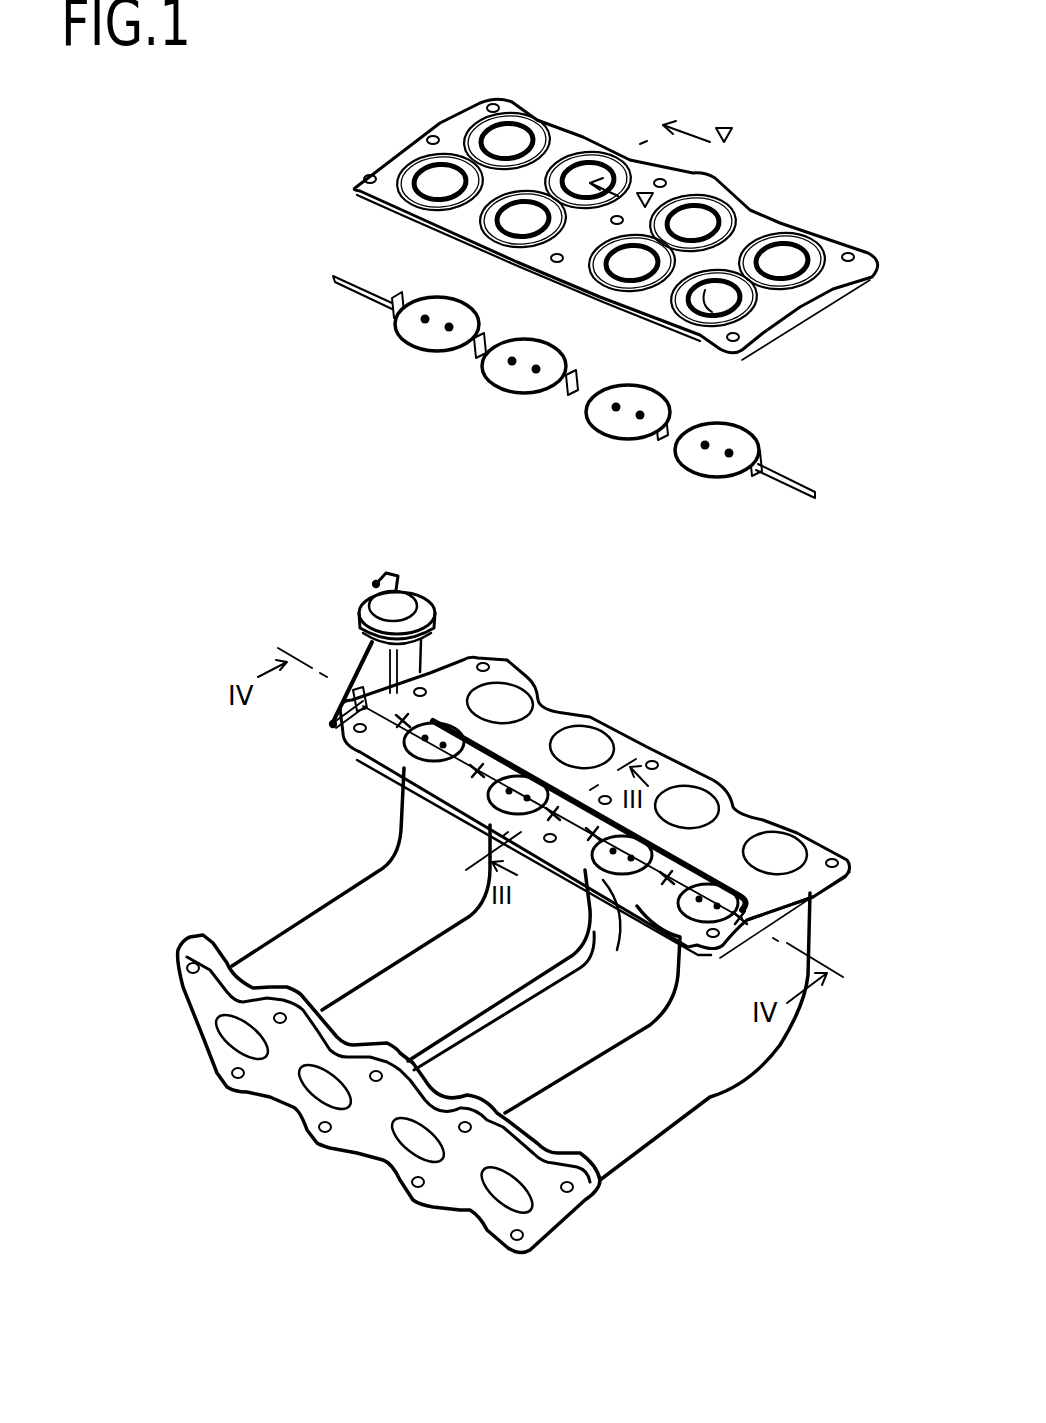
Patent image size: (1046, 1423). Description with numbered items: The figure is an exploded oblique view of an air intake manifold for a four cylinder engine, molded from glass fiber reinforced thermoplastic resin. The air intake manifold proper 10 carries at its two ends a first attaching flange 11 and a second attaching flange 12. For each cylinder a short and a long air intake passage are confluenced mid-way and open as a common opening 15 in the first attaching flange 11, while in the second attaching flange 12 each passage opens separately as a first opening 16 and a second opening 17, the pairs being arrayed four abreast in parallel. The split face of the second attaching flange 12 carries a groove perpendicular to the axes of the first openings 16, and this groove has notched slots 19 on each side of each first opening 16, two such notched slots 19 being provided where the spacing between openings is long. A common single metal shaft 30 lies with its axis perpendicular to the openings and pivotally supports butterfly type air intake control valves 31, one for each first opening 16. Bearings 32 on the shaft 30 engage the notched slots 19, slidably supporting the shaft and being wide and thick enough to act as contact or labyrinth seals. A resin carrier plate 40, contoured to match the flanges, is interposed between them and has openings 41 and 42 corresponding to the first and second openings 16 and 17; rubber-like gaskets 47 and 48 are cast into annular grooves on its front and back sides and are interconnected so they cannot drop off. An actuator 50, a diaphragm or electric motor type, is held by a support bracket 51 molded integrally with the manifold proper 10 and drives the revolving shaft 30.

The air intake manifold proper 10 is at (733, 1103).
The first attaching flange 11 is at (307, 1117).
The second attaching flange 12 is at (600, 720).
The common opening 15 is at (493, 1197).
The first opening 16 is at (800, 904).
The second opening 17 is at (780, 847).
The notched slot 19 is at (617, 950).
The shaft 30 is at (358, 292).
The butterfly type air intake control valve 31 is at (697, 468).
The bearing 32 is at (563, 393).
The carrier plate 40 is at (407, 150).
The opening 41 is at (717, 307).
The opening 42 is at (783, 257).
The gasket 47 is at (577, 277).
The gasket 48 is at (717, 205).
The actuator 50 is at (360, 592).
The support bracket 51 is at (417, 657).